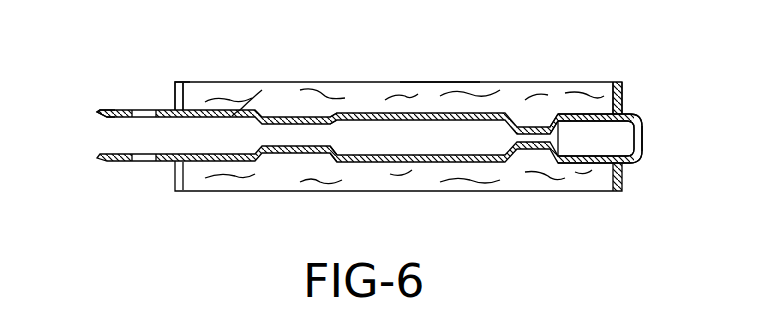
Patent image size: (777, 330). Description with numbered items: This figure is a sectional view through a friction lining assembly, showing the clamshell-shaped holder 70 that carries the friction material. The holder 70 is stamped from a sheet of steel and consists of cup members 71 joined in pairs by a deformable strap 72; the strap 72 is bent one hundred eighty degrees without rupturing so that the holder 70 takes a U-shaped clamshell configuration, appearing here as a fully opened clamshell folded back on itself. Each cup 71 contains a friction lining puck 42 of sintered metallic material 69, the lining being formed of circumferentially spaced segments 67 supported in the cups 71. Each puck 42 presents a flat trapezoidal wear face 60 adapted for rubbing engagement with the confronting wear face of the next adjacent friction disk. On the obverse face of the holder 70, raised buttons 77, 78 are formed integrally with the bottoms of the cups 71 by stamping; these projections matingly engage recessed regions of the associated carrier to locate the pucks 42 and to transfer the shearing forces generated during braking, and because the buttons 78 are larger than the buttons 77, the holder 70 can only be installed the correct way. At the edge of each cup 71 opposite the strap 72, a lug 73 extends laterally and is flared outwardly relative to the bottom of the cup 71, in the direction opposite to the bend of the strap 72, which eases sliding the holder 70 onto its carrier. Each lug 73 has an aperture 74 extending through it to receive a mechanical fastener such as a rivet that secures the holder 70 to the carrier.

The friction lining puck 42 is at (268, 100).
The wear face 60 is at (531, 82).
The segment 67 is at (212, 82).
The sintered metallic material 69 is at (440, 82).
The holder 70 is at (648, 112).
The cup member 71 is at (621, 90).
The deformable strap 72 is at (644, 148).
The lug 73 is at (111, 109).
The aperture 74 is at (145, 110).
The button 77 is at (558, 123).
The button 78 is at (340, 151).